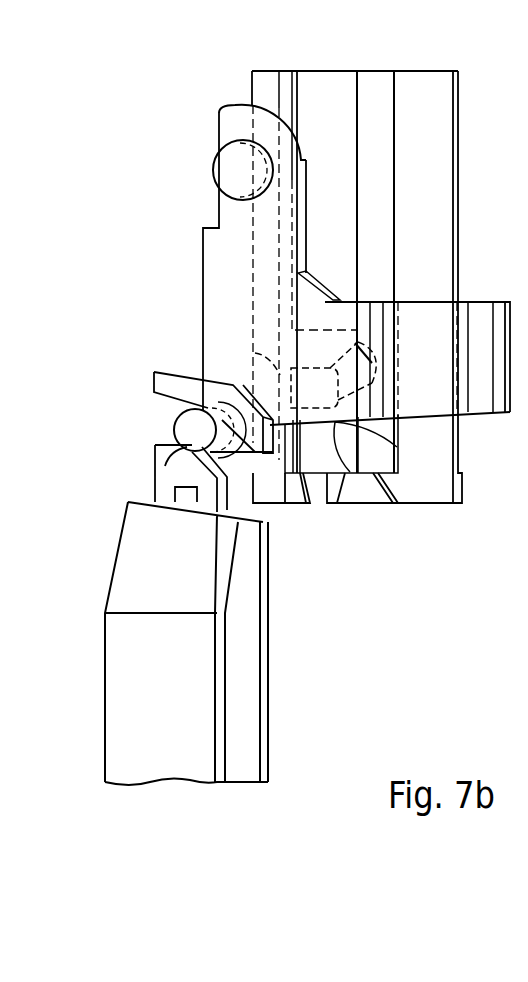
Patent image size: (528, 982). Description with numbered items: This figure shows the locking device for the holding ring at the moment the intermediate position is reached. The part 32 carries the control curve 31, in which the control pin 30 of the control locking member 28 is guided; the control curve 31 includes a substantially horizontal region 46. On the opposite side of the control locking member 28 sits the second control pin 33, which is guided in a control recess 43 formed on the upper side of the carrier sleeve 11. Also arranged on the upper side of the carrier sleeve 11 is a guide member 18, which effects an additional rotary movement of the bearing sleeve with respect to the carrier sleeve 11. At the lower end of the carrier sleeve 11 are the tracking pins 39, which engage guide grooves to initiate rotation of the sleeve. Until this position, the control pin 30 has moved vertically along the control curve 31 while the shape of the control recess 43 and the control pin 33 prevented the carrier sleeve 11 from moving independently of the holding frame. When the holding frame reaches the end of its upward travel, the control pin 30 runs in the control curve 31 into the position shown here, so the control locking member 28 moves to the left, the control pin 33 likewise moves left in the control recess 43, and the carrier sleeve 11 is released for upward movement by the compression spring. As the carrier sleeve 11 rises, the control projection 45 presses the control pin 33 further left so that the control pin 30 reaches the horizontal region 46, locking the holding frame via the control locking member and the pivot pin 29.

The carrier sleeve 11 is at (443, 135).
The guide member 18 is at (372, 83).
The control locking member 28 is at (260, 83).
The pivot pin 29 is at (222, 169).
The control pin 30 is at (172, 433).
The control curve 31 is at (165, 405).
The part 32 is at (113, 697).
The second control pin 33 is at (256, 354).
The tracking pins 39 is at (370, 493).
The control recess 43 is at (378, 348).
The control projection 45 is at (398, 447).
The horizontal region 46 is at (165, 468).